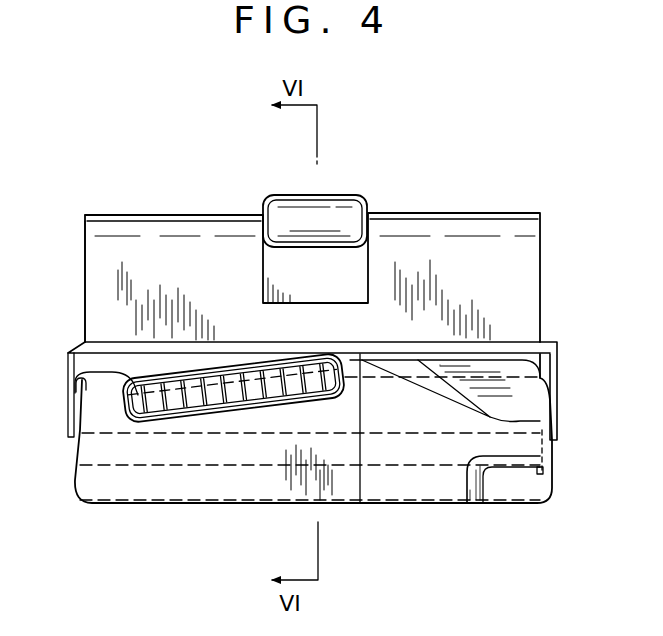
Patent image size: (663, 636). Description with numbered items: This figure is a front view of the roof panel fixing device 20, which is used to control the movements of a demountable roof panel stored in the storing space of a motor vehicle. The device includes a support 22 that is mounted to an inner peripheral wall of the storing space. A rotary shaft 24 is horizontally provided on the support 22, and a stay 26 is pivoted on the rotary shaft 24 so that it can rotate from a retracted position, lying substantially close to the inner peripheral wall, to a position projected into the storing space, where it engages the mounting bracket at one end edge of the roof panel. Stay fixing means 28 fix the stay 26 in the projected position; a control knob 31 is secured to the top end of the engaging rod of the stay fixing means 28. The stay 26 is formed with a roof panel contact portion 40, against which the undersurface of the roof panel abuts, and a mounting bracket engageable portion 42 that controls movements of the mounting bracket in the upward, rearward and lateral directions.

The roof panel fixing device 20 is at (513, 211).
The support 22 is at (157, 228).
The rotary shaft 24 is at (247, 455).
The stay 26 is at (122, 506).
The stay fixing means 28 is at (345, 193).
The control knob 31 is at (281, 198).
The roof panel contact portion 40 is at (84, 371).
The mounting bracket engageable portion 42 is at (537, 483).